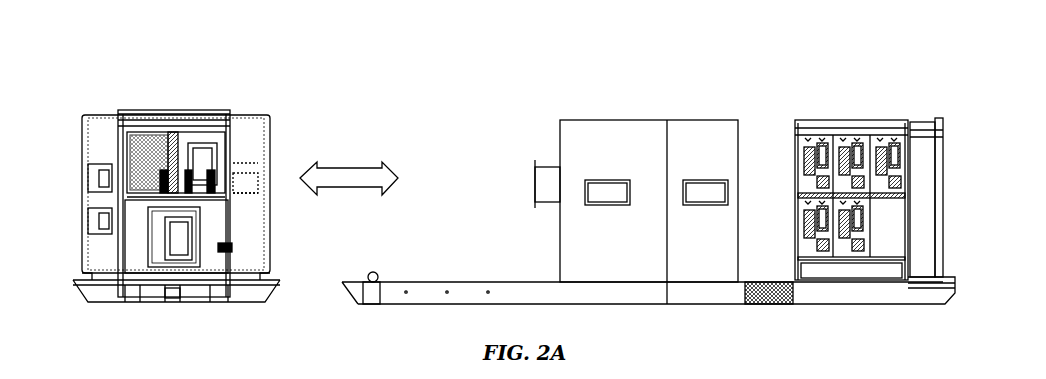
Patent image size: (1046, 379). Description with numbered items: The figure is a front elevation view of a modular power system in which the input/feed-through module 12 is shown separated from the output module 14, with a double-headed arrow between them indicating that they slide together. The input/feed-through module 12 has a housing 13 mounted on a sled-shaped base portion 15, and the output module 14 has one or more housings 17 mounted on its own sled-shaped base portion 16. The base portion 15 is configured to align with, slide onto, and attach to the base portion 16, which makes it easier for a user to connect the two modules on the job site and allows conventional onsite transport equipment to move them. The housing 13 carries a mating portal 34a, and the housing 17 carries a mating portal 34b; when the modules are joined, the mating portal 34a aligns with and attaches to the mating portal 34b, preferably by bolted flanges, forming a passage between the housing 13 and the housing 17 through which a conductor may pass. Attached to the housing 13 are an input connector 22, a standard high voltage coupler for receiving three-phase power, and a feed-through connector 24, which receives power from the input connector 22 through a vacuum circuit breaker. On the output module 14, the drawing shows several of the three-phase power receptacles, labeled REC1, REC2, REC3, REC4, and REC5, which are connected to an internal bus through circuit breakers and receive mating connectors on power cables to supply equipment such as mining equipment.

The input/feed-through module 12 is at (219, 90).
The housing 13 is at (266, 140).
The output module 14 is at (745, 89).
The sled-shaped base portion 15 is at (243, 298).
The sled-shaped base portion 16 is at (452, 282).
The housing 17 is at (637, 120).
The input connector 22 is at (88, 172).
The feed-through connector 24 is at (90, 218).
The mating portal 34a is at (257, 182).
The mating portal 34b is at (535, 170).
The power receptacle REC1 is at (821, 176).
The power receptacle REC2 is at (857, 176).
The power receptacle REC3 is at (896, 176).
The power receptacle REC4 is at (821, 252).
The power receptacle REC5 is at (856, 252).